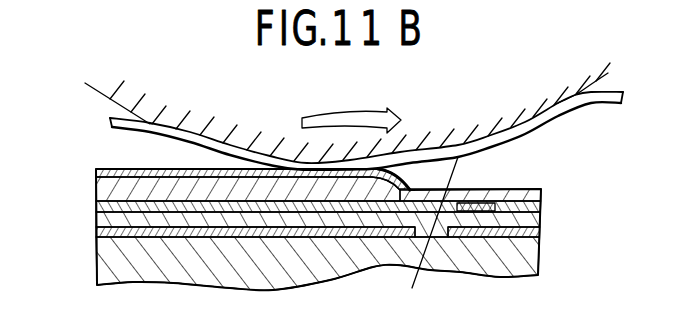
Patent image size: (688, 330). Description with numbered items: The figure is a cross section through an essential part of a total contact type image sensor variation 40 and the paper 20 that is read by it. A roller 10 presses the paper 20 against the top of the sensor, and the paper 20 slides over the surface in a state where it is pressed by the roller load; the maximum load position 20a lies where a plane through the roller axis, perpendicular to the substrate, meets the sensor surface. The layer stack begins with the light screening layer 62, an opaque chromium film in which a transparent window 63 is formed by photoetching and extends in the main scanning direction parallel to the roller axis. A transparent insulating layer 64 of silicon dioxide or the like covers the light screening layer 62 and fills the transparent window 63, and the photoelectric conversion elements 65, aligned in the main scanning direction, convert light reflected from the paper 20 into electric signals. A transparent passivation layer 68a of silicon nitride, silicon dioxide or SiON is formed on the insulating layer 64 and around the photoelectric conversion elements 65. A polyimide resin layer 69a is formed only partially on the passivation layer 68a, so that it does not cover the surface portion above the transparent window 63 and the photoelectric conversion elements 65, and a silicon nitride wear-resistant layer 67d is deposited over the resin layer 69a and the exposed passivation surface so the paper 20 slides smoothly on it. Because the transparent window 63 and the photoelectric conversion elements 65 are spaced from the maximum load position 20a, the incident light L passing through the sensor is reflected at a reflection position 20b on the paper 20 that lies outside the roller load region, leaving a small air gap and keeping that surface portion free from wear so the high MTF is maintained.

The roller 10 is at (107, 100).
The paper 20 is at (615, 104).
The maximum load position 20a is at (343, 168).
The reflection position 20b is at (464, 153).
The recording head 40 is at (331, 229).
The light screening layer 62 is at (541, 236).
The transparent window 63 is at (387, 267).
The transparent insulating layer 64 is at (541, 222).
The photoelectric conversion elements 65 is at (458, 157).
The transparent wear-resistant layer 67d is at (541, 191).
The transparent passivation layer 68a is at (541, 210).
The resin layer 69a is at (103, 193).
The incident light L is at (428, 235).